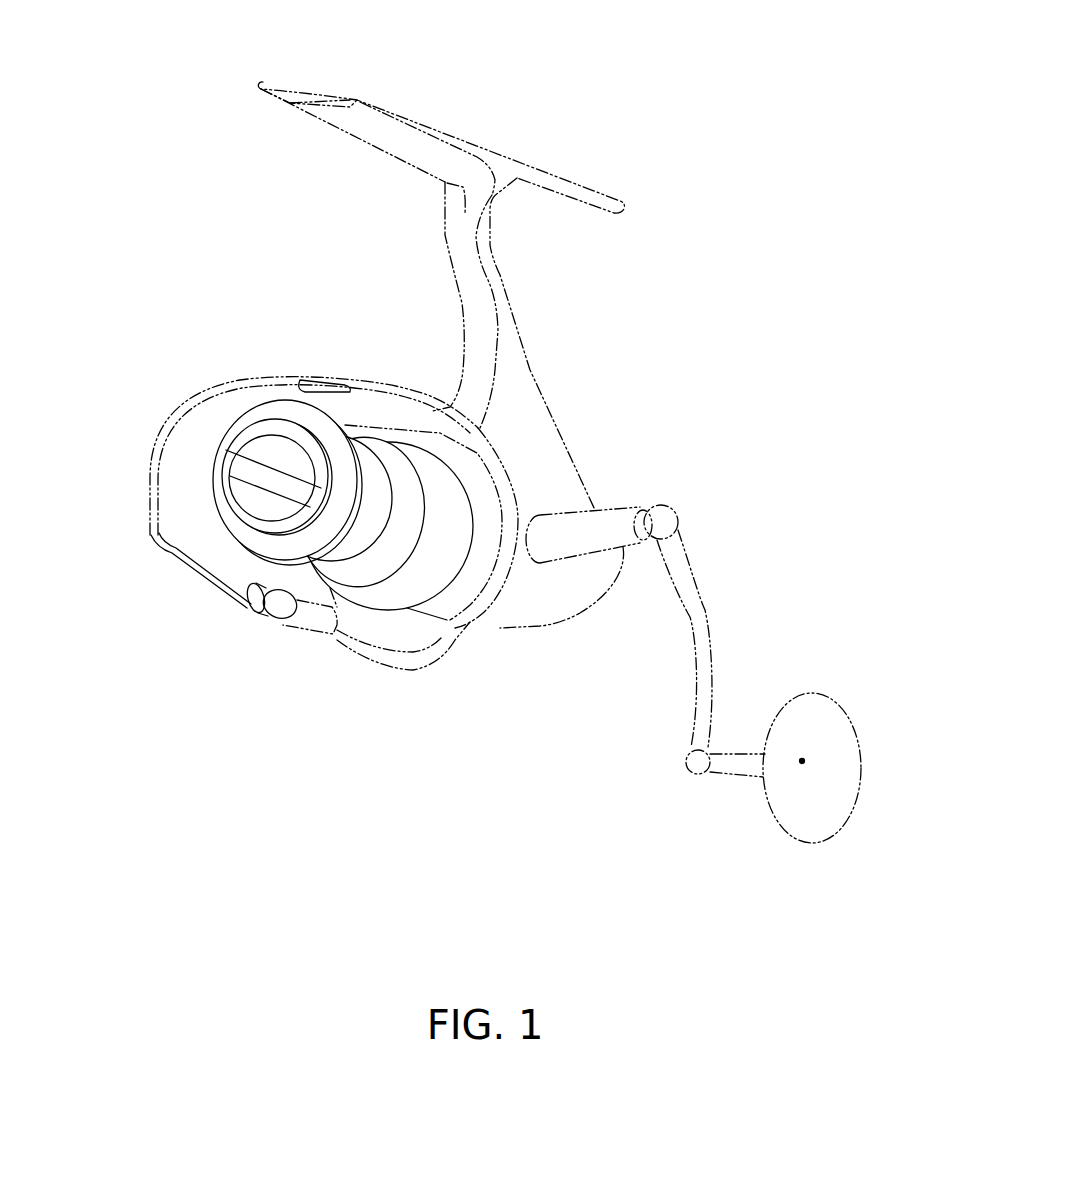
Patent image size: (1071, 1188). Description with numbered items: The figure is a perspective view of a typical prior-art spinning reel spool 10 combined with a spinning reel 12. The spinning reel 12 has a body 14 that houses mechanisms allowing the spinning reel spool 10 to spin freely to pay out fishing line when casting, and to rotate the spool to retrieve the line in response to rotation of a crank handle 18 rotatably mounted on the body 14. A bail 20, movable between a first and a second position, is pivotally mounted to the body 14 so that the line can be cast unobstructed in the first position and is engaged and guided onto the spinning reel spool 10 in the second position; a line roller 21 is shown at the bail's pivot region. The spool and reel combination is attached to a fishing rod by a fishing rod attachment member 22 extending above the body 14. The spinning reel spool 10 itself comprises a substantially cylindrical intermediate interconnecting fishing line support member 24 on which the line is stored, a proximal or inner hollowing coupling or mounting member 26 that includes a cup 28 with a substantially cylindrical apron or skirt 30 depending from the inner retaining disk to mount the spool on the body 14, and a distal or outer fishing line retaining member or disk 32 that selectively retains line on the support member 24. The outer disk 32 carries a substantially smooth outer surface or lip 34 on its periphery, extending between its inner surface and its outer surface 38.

The spinning reel spool 10 is at (210, 592).
The spinning reel 12 is at (308, 686).
The body 14 is at (601, 414).
The crank handle 18 is at (740, 574).
The bail 20 is at (165, 338).
The line roller 21 is at (274, 635).
The fishing rod attachment member 22 is at (638, 147).
The substantially cylindrical intermediate interconnecting fishing line support memb 24 is at (363, 528).
The proximal or inner hollowing coupling or mounting member 26 is at (469, 641).
The cup 28 is at (445, 505).
The substantially cylindrical apron or skirt 30 is at (387, 457).
The distal or outer fishing line retaining member or disk 32 is at (167, 522).
The substantially smooth outer surface or lip 34 is at (285, 402).
The outer surface 38 is at (217, 500).